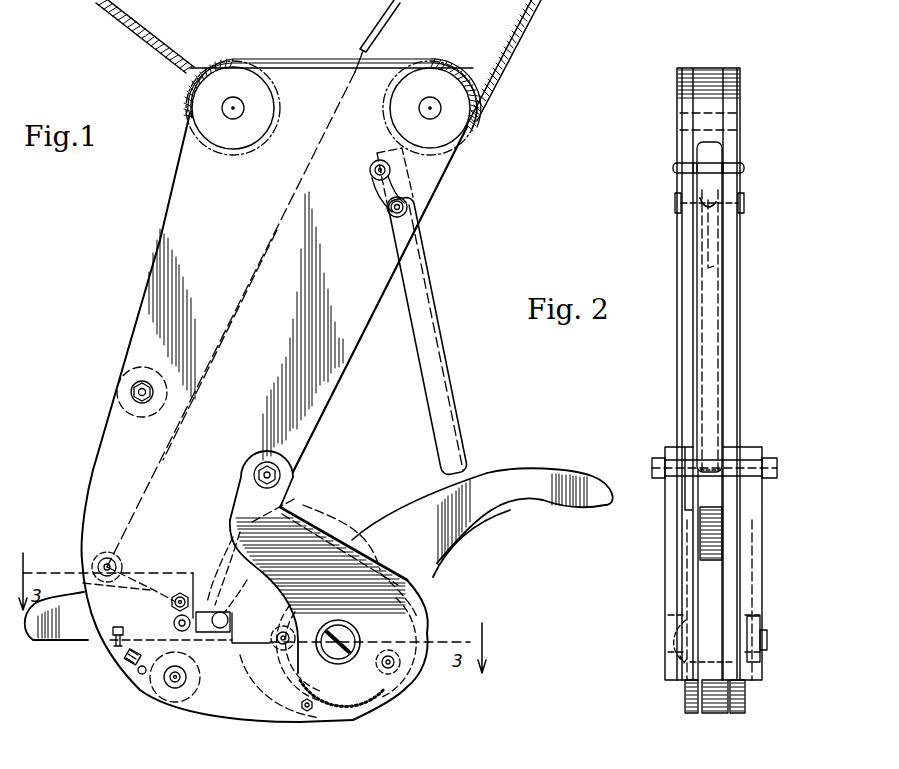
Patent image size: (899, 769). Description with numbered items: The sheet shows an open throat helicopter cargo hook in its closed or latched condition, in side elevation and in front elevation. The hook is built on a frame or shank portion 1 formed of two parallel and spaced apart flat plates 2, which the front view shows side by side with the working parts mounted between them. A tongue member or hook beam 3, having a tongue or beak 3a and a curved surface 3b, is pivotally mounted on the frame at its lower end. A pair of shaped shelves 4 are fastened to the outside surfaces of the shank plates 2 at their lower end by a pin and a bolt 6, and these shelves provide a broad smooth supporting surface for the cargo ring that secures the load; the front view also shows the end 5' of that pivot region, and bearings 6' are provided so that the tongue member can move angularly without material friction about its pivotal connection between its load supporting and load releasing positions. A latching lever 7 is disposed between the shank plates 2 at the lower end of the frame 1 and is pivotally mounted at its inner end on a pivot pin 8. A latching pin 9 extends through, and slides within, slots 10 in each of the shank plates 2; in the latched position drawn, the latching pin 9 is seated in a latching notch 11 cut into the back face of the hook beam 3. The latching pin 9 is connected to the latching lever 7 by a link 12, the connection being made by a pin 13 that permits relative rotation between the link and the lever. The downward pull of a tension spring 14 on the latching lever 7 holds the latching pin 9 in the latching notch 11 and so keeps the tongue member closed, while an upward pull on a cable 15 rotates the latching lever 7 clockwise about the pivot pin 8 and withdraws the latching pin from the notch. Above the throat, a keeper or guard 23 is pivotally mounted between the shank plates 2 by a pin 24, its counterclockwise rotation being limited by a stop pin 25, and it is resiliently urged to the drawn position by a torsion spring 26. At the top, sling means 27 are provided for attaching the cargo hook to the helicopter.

In FIG. 1, the frame 1 is at (158, 232).
In FIG. 1, the flat plates 2 is at (142, 300).
In FIG. 2, the flat plates 2 is at (677, 262).
In FIG. 1, the hook beam 3 is at (430, 587).
In FIG. 2, the hook beam 3 is at (715, 527).
In FIG. 1, the tongue 3a is at (543, 503).
In FIG. 1, the curved surface 3b is at (258, 690).
In FIG. 1, the shaped shelves 4 is at (425, 633).
In FIG. 2, the shaped shelves 4 is at (762, 560).
In FIG. 2, the pivot end 5' is at (672, 696).
In FIG. 2, the bolt 6 is at (707, 449).
In FIG. 2, the bearings 6' is at (723, 708).
In FIG. 1, the latching lever 7 is at (90, 642).
In FIG. 1, the pivot pin 8 is at (113, 565).
In FIG. 1, the latching pin 9 is at (230, 621).
In FIG. 1, the slots 10 is at (163, 568).
In FIG. 1, the latching notch 11 is at (181, 609).
In FIG. 1, the link 12 is at (188, 632).
In FIG. 1, the pin 13 is at (168, 606).
In FIG. 1, the tension spring 14 is at (128, 670).
In FIG. 1, the cable 15 is at (168, 438).
In FIG. 1, the keeper 23 is at (455, 366).
In FIG. 2, the keeper 23 is at (710, 378).
In FIG. 1, the pin 24 is at (408, 207).
In FIG. 2, the pin 24 is at (735, 197).
In FIG. 1, the stop pin 25 is at (390, 170).
In FIG. 2, the stop pin 25 is at (740, 170).
In FIG. 1, the torsion spring 26 is at (398, 187).
In FIG. 1, the sling means 27 is at (215, 68).